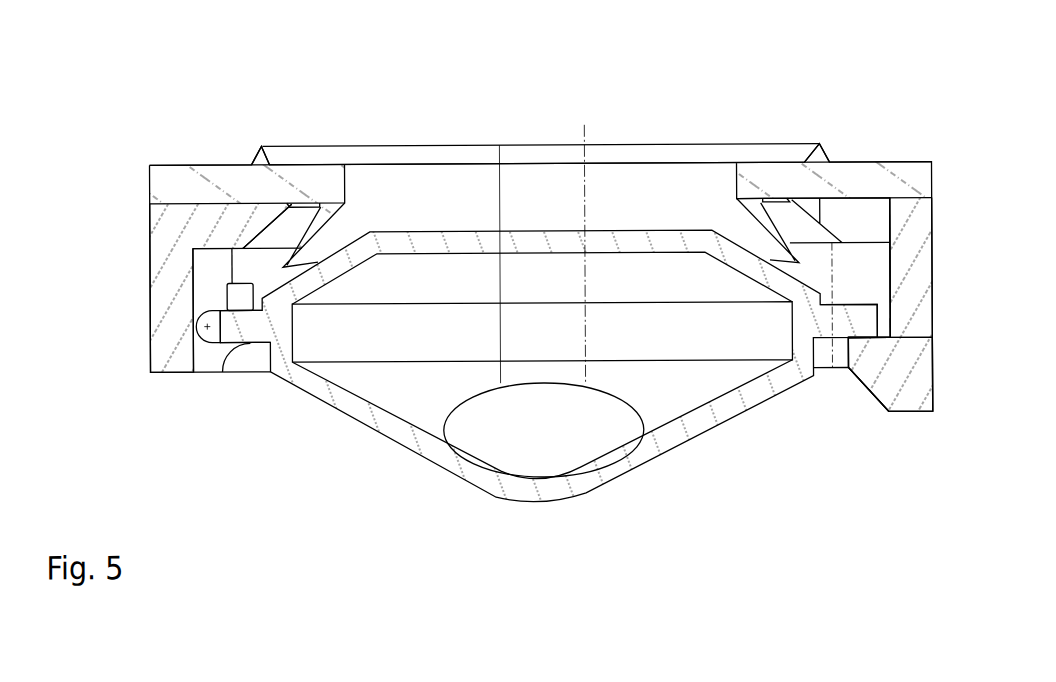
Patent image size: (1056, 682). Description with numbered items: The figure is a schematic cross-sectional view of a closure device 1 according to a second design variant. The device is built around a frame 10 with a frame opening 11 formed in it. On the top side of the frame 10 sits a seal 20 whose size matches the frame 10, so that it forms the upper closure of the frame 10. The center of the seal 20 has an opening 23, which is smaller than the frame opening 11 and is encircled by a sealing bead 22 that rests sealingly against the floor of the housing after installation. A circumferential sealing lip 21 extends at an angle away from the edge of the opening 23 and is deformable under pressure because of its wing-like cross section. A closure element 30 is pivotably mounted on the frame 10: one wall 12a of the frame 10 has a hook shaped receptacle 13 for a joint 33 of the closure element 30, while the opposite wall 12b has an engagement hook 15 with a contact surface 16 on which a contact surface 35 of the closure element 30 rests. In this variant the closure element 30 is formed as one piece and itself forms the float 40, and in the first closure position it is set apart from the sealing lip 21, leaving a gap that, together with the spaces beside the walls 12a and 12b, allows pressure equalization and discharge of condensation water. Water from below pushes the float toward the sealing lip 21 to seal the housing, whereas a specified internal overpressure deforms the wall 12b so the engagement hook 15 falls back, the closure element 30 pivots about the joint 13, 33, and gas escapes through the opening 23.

The closure device 1 is at (923, 84).
The frame 10 is at (160, 228).
The frame opening 11 is at (890, 222).
The wall 12a is at (160, 282).
The opposite wall 12b is at (920, 290).
The hook shaped receptacle 13 is at (212, 363).
The engagement hook 15 is at (862, 362).
The contact surface 16 is at (887, 339).
The seal 20 is at (912, 175).
The sealing lip 21 is at (312, 233).
The sealing bead 22 is at (260, 147).
The opening 23 is at (347, 185).
The closure element 30 is at (387, 440).
The joint 33 is at (243, 327).
The contact surface 35 is at (862, 325).
The float 40 is at (677, 397).